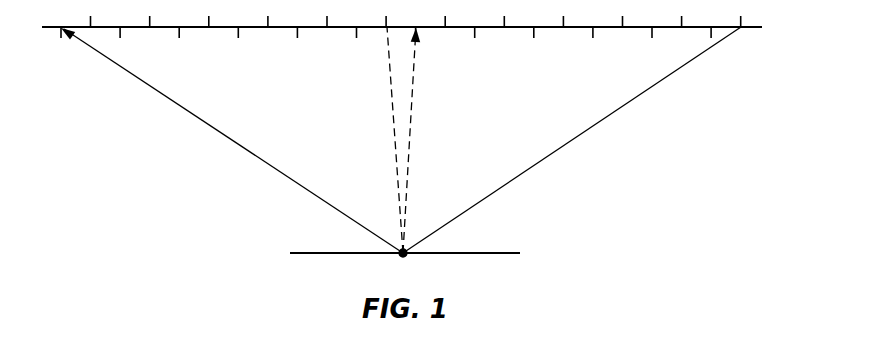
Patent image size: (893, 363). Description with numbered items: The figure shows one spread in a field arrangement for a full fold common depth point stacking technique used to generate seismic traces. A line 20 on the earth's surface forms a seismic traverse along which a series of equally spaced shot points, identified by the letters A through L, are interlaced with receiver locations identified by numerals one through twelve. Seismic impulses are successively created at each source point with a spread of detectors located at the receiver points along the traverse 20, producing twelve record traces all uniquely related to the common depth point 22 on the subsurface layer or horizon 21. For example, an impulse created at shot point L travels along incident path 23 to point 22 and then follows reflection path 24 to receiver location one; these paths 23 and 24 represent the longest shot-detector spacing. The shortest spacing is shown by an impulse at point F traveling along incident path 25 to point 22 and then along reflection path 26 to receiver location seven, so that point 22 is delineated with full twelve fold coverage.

The line 20 is at (752, 27).
The layer 21 is at (470, 254).
The common depth point 22 is at (408, 251).
The incident path 23 is at (608, 117).
The reflection path 24 is at (238, 148).
The incident path 25 is at (392, 140).
The reflection path 26 is at (411, 136).